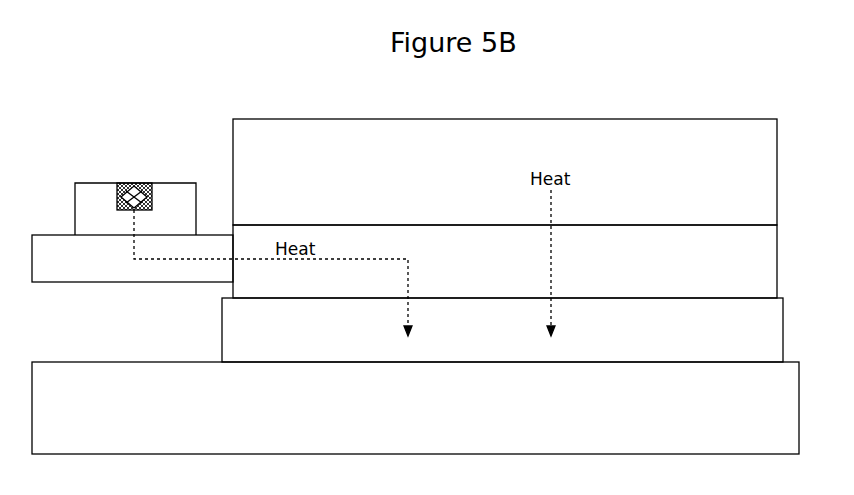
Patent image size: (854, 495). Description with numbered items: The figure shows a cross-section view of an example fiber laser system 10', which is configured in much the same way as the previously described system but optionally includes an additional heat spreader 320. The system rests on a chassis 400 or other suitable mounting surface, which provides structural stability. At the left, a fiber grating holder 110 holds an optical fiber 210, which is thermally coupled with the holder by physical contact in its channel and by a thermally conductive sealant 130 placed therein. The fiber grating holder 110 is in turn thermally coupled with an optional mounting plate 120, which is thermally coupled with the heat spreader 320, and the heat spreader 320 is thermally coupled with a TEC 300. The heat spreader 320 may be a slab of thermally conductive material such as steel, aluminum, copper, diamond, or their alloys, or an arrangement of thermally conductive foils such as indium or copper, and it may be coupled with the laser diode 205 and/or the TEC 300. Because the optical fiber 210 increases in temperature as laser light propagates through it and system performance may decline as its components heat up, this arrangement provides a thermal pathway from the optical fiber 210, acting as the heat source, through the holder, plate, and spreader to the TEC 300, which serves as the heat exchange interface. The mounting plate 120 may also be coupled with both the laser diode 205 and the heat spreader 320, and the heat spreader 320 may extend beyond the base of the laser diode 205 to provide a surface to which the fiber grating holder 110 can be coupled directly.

The fiber laser system 10' is at (505, 178).
The fiber grating holder 110 is at (93, 201).
The mounting plate 120 is at (80, 277).
The thermally conductive sealant 130 is at (120, 182).
The optical fiber 210 is at (145, 182).
The laser diode 205 is at (763, 222).
The heat spreader 320 is at (763, 296).
The TEC 300 is at (771, 361).
The chassis 400 is at (785, 451).